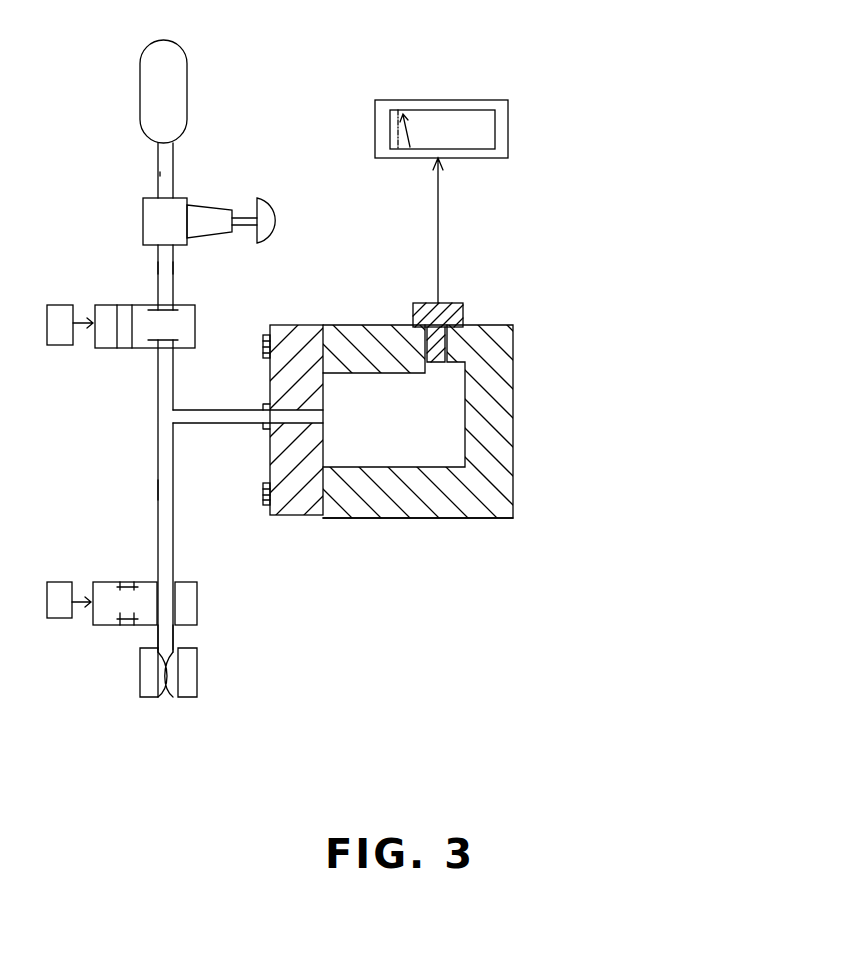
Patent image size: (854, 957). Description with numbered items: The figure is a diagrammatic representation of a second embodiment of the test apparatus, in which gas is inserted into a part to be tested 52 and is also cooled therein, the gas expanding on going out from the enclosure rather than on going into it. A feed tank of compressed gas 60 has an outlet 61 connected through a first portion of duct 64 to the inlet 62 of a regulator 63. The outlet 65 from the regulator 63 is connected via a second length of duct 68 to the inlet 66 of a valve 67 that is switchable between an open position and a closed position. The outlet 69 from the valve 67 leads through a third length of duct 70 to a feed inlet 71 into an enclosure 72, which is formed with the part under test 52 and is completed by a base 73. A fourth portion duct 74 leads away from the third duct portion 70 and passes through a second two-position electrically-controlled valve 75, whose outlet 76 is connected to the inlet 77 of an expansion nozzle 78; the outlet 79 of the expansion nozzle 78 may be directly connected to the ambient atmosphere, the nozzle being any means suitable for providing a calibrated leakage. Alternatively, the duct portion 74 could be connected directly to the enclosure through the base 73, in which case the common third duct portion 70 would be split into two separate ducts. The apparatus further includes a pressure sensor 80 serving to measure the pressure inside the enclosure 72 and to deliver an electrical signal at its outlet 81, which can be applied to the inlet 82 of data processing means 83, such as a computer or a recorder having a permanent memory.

The feed tank of compressed gas 60 is at (158, 93).
The outlet 61 is at (172, 163).
The inlet 62 is at (167, 193).
The regulator 63 is at (163, 220).
The first portion of duct 64 is at (166, 173).
The outlet 65 is at (158, 268).
The inlet 66 is at (165, 307).
The valve 67 is at (102, 349).
The second length of duct 68 is at (165, 273).
The outlet 69 is at (165, 353).
The third length of duct 70 is at (205, 417).
The feed inlet 71 is at (325, 423).
The enclosure 72 is at (443, 440).
The base 73 is at (302, 338).
The part to be tested 52 is at (385, 529).
The fourth portion duct 74 is at (168, 485).
The second two-position electrically-controlled valve 75 is at (183, 600).
The outlet 76 is at (167, 623).
The inlet 77 is at (155, 635).
The expansion nozzle 78 is at (190, 677).
The outlet 79 is at (166, 699).
The pressure sensor 80 is at (455, 320).
The outlet 81 is at (440, 298).
The inlet 82 is at (441, 160).
The data processing means 83 is at (445, 125).